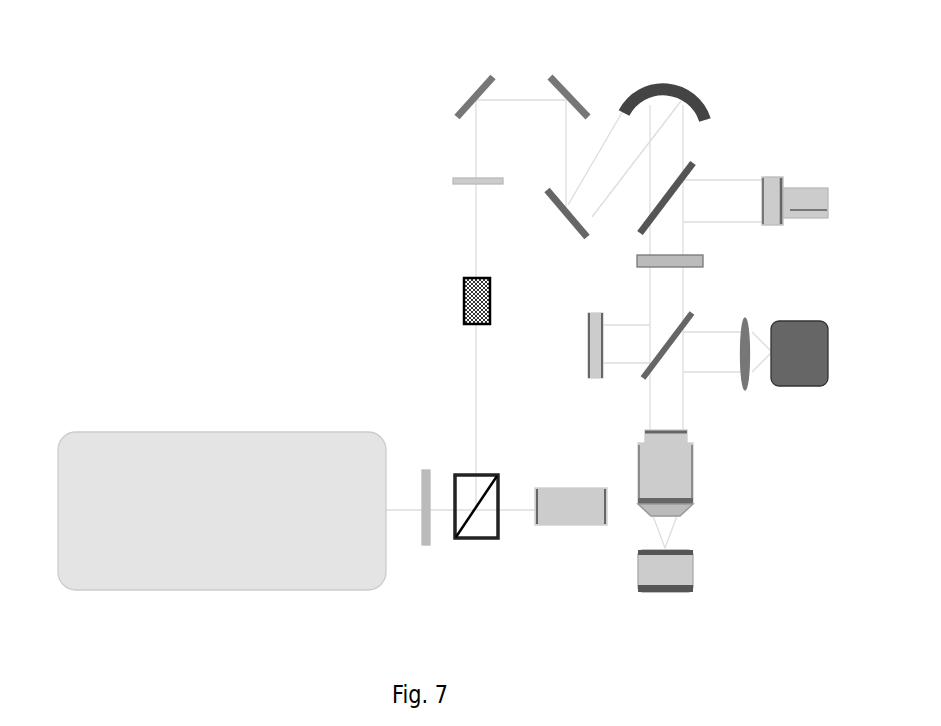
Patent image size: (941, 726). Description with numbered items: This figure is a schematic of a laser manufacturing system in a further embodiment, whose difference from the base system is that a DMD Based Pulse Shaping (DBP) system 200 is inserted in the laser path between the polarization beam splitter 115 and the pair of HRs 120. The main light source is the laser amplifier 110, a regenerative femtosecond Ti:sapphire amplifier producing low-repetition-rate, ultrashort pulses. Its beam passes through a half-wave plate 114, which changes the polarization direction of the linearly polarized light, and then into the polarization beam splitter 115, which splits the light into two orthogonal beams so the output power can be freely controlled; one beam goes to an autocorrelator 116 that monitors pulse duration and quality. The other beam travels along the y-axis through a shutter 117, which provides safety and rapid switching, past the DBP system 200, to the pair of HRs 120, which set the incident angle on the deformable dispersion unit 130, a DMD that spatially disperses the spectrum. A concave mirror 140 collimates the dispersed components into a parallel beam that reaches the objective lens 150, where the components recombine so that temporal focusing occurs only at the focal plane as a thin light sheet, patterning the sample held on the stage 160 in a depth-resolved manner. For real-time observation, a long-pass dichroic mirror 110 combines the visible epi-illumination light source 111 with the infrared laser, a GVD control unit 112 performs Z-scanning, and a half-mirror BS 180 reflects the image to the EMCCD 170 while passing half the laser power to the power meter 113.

The laser amplifier 110 is at (323, 417).
The epi-illumination light source 111 is at (795, 172).
The group velocity dispersion control unit 112 is at (705, 260).
The power meter 113 is at (585, 318).
The half-wave plate 114 is at (426, 452).
The polarization beam splitter 115 is at (490, 470).
The autocorrelator 116 is at (570, 465).
The shutter 117 is at (450, 174).
The pair of HRs 120 is at (560, 72).
The deformable dispersion unit 130 is at (545, 183).
The concave mirror 140 is at (680, 82).
The objective lens 150 is at (695, 480).
The sample stage 160 is at (697, 573).
The EMCCD 170 is at (828, 354).
The BS 180 is at (648, 328).
The DMD Based Pulse Shaping system 200 is at (462, 293).